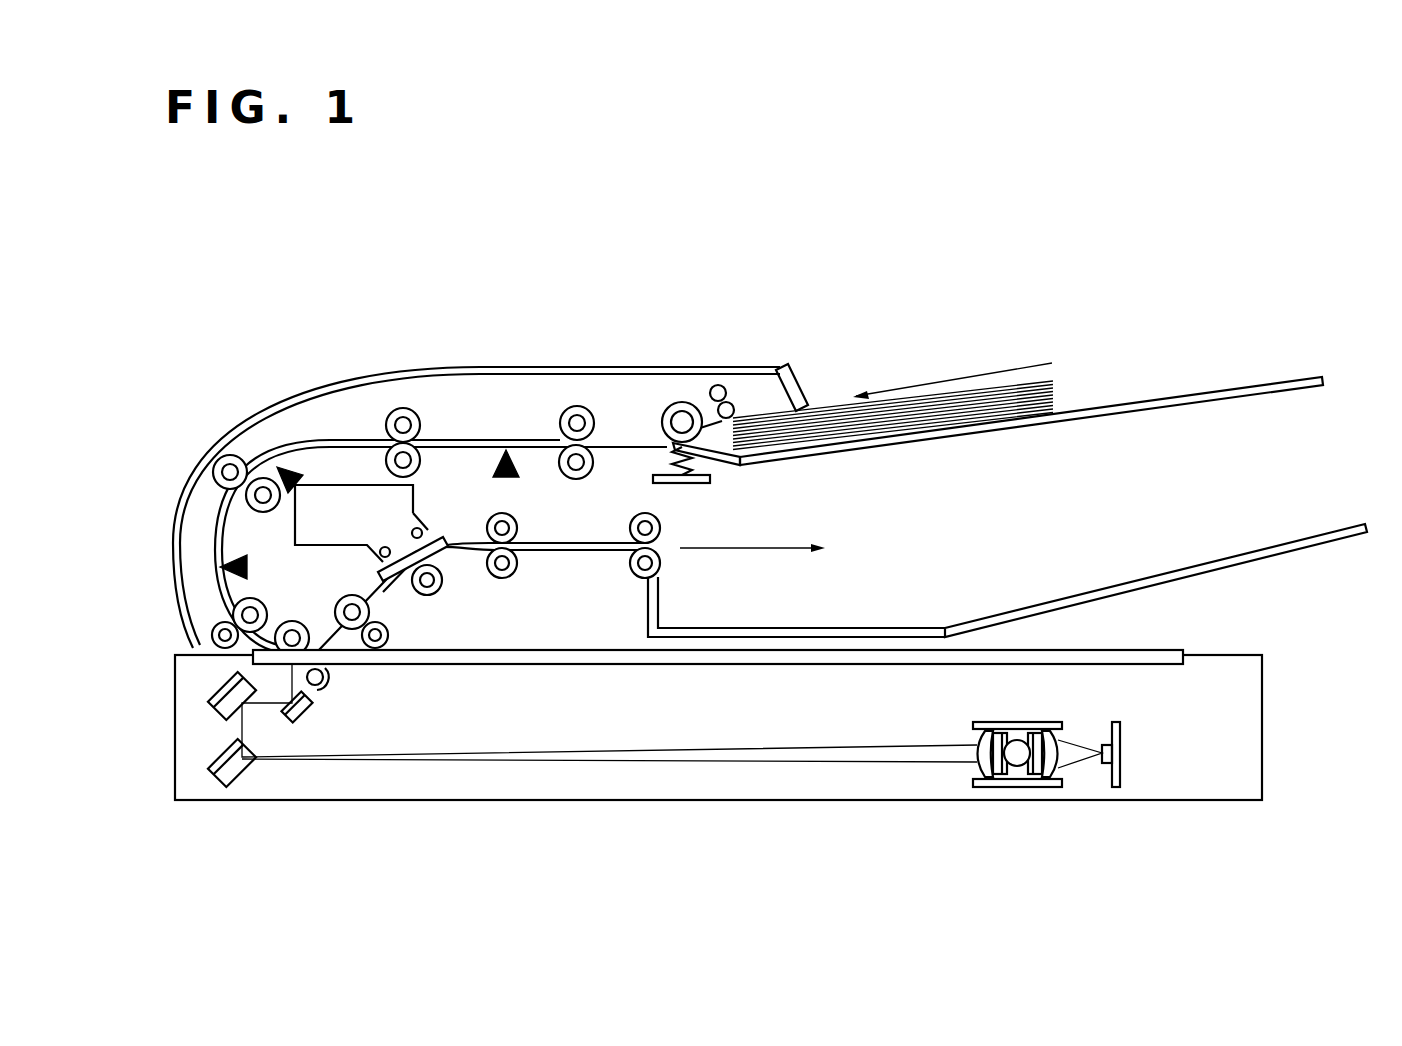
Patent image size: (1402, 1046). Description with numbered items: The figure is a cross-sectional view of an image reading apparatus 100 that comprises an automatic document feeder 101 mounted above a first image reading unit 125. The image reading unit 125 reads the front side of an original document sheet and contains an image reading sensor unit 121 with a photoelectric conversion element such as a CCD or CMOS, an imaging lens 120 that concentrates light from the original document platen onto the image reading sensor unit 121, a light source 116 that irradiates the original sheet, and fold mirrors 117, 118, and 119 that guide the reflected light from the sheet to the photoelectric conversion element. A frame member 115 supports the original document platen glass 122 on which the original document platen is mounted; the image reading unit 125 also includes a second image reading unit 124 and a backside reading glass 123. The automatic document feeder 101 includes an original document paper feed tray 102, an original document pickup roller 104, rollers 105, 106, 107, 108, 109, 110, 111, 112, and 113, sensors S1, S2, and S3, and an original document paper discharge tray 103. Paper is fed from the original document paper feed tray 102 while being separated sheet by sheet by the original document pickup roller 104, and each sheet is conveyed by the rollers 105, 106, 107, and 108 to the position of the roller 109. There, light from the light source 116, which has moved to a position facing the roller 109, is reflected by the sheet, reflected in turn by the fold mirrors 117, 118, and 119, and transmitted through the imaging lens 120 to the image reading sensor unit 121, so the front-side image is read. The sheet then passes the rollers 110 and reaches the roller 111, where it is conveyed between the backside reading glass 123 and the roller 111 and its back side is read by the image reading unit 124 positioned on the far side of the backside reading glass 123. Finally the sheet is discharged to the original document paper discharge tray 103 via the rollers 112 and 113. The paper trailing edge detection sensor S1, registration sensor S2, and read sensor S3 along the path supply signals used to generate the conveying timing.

The image reading apparatus 100 is at (781, 228).
The automatic document feeder 101 is at (290, 393).
The original document paper feed tray 102 is at (1266, 381).
The original document paper discharge tray 103 is at (1322, 535).
The original document pickup roller 104 is at (690, 405).
The roller 105 is at (594, 465).
The roller 106 is at (420, 463).
The roller 107 is at (247, 500).
The roller 108 is at (213, 635).
The roller 109 is at (293, 621).
The rollers 110 is at (385, 645).
The roller 111 is at (440, 590).
The roller 112 is at (515, 568).
The roller 113 is at (658, 565).
The frame member 115 is at (1263, 730).
The light source 116 is at (326, 680).
The fold mirror 117 is at (312, 708).
The fold mirror 118 is at (219, 686).
The fold mirror 119 is at (219, 748).
The imaging lens 120 is at (1022, 722).
The image reading sensor unit 121 is at (1122, 752).
The original document platen glass 122 is at (680, 657).
The backside reading glass 123 is at (445, 536).
The image reading unit 124 is at (347, 484).
The image reading unit 125 is at (335, 801).
The paper trailing edge detection sensor S1 is at (507, 447).
The registration sensor S2 is at (272, 466).
The read sensor S3 is at (218, 566).